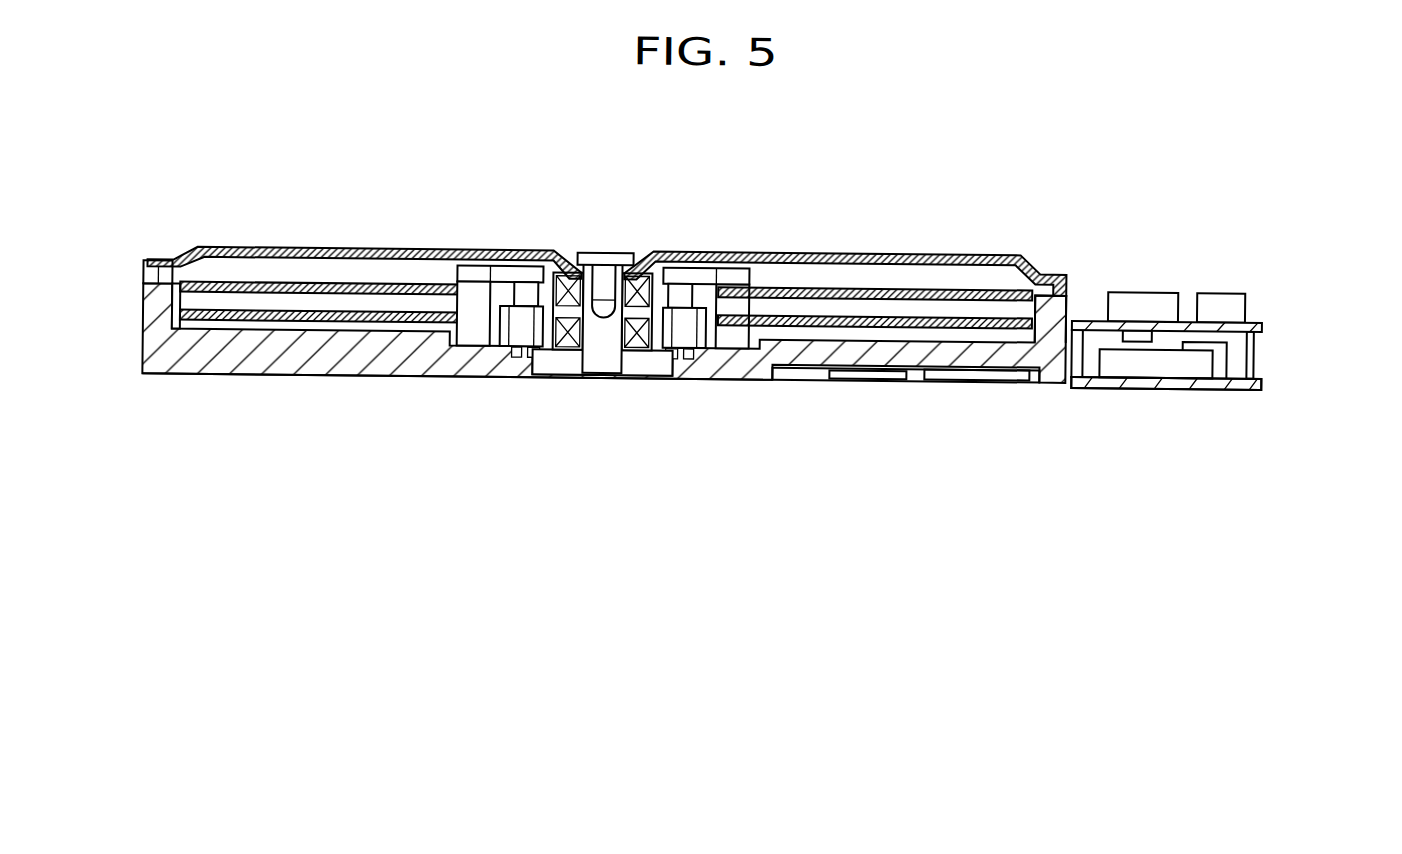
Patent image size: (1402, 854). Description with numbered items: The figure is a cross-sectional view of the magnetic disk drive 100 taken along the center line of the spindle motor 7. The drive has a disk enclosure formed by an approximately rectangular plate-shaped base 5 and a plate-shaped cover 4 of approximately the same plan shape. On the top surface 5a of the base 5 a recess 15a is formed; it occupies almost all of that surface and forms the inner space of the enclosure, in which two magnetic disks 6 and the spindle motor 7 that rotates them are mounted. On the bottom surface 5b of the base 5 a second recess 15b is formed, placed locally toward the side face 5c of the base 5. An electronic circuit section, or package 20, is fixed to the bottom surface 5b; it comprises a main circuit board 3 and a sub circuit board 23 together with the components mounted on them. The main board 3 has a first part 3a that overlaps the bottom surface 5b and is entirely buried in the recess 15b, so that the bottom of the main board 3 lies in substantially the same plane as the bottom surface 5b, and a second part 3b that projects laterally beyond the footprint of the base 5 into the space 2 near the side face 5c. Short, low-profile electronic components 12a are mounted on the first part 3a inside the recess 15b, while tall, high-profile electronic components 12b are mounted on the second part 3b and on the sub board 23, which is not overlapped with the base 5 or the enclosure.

The magnetic disk drive 100 is at (207, 140).
The space 2 is at (1263, 194).
The main circuit board 3 is at (1237, 383).
The first part 3a is at (1060, 473).
The second part 3b is at (1260, 471).
The cover 4 is at (391, 251).
The base 5 is at (338, 366).
The top surface 5a is at (165, 264).
The bottom surface 5b is at (400, 378).
The side face 5c is at (1068, 305).
The magnetic disks 6 is at (318, 287).
The spindle motor 7 is at (607, 340).
The short electronic components 12a is at (867, 376).
The tall electronic components 12b is at (1220, 289).
The recess 15a is at (180, 305).
The recess 15b is at (752, 350).
The electronic circuit section 20 is at (1267, 346).
The sub circuit board 23 is at (1263, 320).